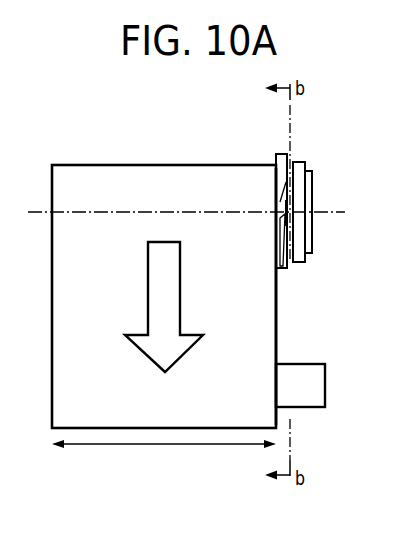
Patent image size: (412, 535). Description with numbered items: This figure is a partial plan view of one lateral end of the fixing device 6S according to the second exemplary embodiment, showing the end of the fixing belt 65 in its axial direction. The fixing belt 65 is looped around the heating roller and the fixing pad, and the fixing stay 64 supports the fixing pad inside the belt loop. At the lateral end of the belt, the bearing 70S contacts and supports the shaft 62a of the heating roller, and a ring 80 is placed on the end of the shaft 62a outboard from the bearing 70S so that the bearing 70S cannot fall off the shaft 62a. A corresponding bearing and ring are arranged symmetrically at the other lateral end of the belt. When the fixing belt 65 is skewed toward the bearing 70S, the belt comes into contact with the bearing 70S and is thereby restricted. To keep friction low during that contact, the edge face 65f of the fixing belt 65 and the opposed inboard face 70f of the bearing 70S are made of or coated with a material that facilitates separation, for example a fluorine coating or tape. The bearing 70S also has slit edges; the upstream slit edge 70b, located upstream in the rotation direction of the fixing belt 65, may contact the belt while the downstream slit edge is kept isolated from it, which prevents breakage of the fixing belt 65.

The fixing device 6S is at (177, 287).
The fixing belt 65 is at (277, 308).
The edge face 65f is at (276, 174).
The fixing stay 64 is at (320, 385).
The bearing 70S is at (290, 190).
The inboard face 70f is at (275, 192).
The upstream slit edge 70b is at (284, 213).
The ring 80 is at (300, 161).
The shaft 62a is at (312, 230).